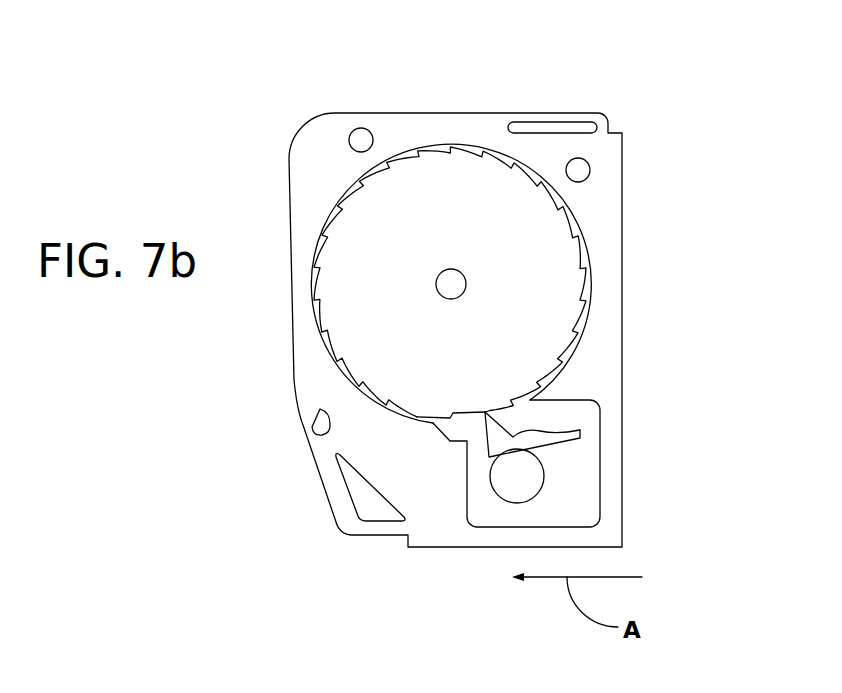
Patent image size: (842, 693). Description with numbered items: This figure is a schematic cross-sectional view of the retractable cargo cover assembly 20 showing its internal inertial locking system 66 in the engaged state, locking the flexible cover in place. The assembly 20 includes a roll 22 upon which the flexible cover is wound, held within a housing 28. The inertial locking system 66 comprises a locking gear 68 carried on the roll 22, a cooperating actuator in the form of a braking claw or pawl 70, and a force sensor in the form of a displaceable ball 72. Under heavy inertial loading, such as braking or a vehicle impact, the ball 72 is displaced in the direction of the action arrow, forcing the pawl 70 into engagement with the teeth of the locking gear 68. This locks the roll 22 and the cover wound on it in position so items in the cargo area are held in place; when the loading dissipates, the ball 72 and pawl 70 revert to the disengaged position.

The retractable cargo cover assembly 20 is at (265, 463).
The roll 22 is at (441, 144).
The housing 28 is at (622, 363).
The inertial locking system 66 is at (593, 225).
The locking gear 68 is at (540, 273).
The pawl 70 is at (543, 442).
The ball 72 is at (533, 482).